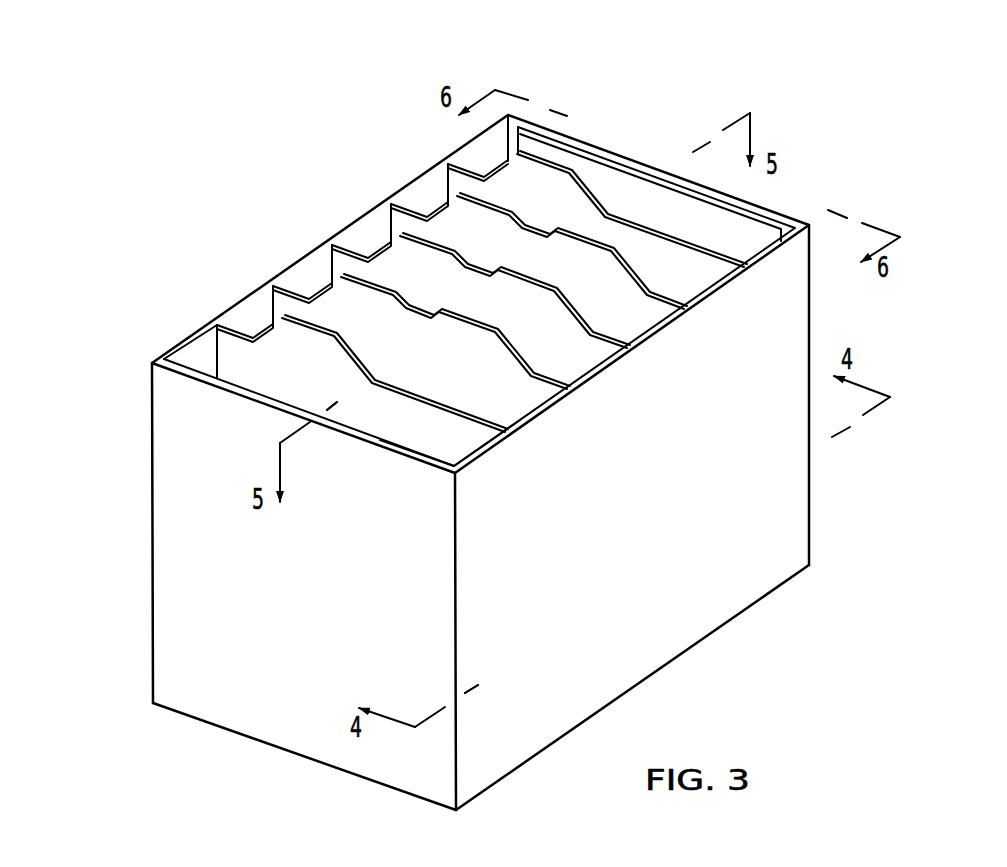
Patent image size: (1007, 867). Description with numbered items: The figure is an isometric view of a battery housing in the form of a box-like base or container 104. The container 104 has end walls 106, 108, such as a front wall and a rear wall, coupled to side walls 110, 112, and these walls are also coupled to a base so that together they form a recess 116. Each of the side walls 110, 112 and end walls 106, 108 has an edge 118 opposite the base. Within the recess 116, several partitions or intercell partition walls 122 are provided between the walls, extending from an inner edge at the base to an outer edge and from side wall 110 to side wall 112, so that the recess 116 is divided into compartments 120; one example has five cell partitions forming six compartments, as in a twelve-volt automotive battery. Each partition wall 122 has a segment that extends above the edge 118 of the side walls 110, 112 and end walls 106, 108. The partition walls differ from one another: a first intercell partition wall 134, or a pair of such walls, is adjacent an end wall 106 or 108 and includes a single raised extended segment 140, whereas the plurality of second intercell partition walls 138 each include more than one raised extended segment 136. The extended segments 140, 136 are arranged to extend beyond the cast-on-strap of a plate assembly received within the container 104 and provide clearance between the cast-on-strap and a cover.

The container 104 is at (948, 125).
The end wall 106 is at (205, 560).
The end wall 108 is at (810, 492).
The side wall 110 is at (768, 520).
The side wall 112 is at (151, 463).
The recess 116 is at (491, 406).
The edge 118 is at (755, 206).
The compartments 120 is at (442, 458).
The intercell partition walls 122 is at (433, 202).
The first intercell partition wall 134 is at (400, 278).
The extended segments 136 is at (463, 333).
The second intercell partition walls 138 is at (558, 315).
The extended segment 140 is at (297, 357).